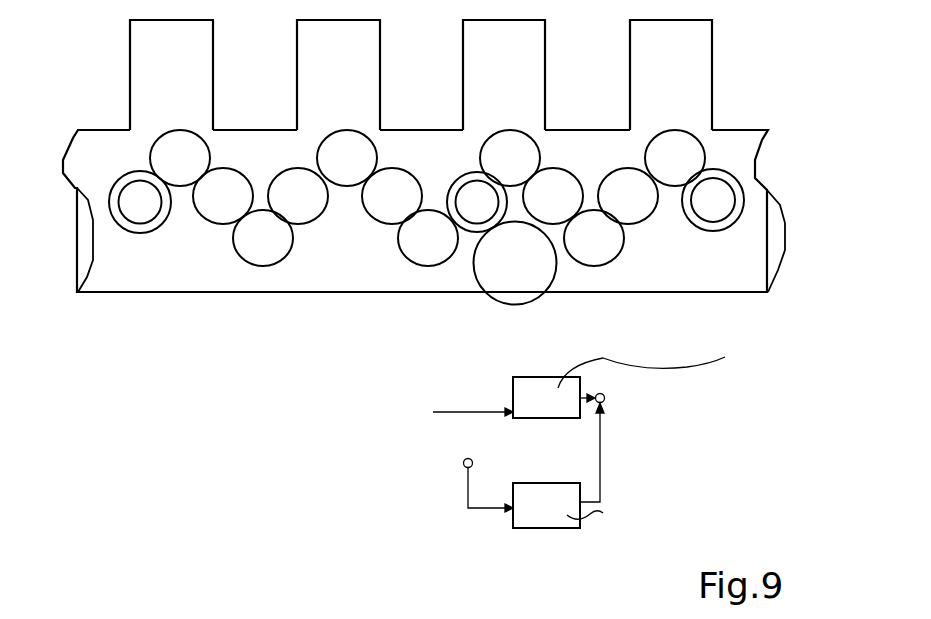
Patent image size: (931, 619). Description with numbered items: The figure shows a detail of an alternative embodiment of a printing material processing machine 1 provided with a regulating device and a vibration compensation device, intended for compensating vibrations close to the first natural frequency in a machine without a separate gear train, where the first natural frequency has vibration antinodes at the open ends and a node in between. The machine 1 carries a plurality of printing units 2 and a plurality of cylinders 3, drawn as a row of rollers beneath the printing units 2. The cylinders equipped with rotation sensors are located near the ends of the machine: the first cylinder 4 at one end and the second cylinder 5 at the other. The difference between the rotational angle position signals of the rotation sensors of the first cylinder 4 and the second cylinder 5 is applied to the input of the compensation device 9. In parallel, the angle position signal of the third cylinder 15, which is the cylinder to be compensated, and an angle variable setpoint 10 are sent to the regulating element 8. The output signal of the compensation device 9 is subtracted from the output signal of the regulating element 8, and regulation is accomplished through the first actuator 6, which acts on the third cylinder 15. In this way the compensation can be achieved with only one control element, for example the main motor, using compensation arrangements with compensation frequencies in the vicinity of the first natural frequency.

The printing material processing machine 1 is at (424, 211).
The printing unit 2 is at (421, 75).
The cylinder 3 is at (427, 198).
The first cylinder 4 is at (477, 463).
The second cylinder 5 is at (459, 463).
The first actuator 6 is at (600, 393).
The regulating element 8 is at (682, 421).
The compensation device 9 is at (603, 499).
The angle variable setpoint 10 is at (458, 408).
The third cylinder 15 is at (508, 387).